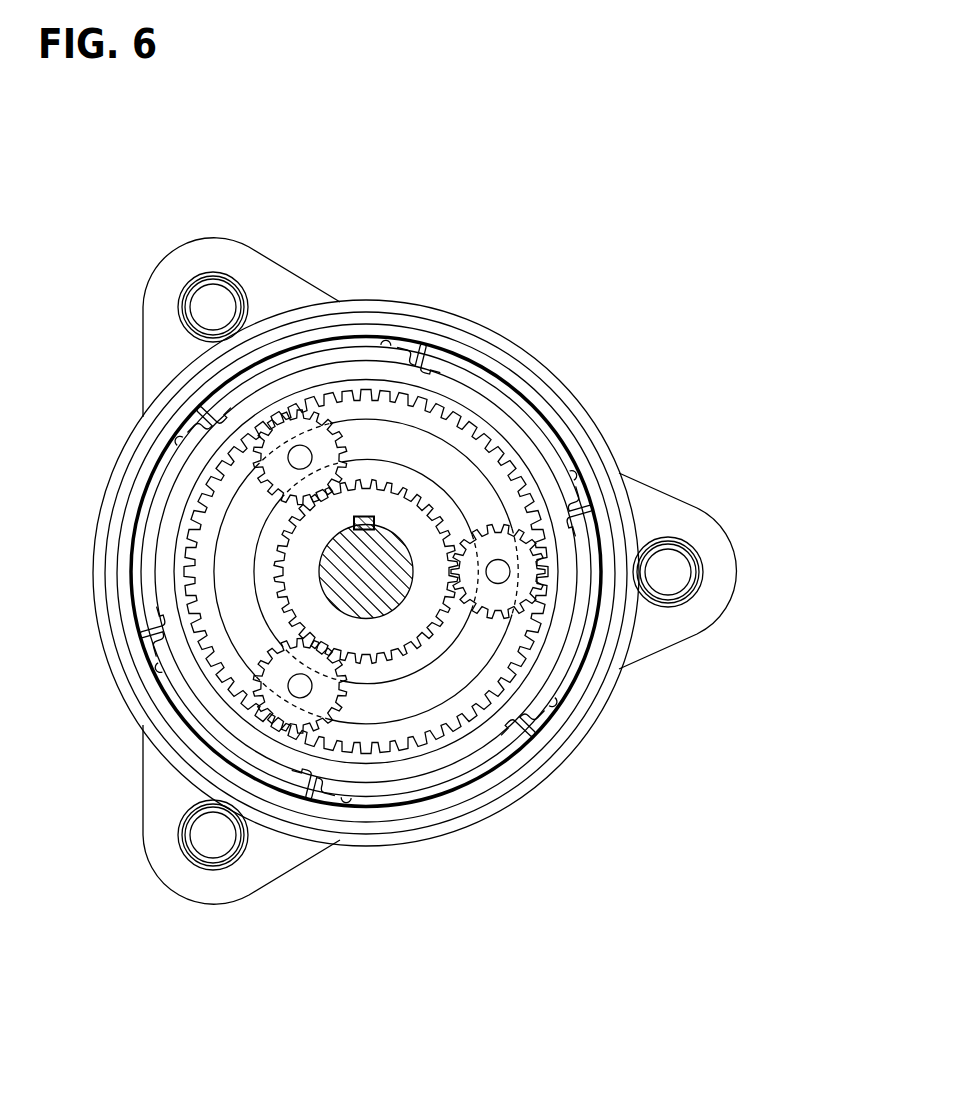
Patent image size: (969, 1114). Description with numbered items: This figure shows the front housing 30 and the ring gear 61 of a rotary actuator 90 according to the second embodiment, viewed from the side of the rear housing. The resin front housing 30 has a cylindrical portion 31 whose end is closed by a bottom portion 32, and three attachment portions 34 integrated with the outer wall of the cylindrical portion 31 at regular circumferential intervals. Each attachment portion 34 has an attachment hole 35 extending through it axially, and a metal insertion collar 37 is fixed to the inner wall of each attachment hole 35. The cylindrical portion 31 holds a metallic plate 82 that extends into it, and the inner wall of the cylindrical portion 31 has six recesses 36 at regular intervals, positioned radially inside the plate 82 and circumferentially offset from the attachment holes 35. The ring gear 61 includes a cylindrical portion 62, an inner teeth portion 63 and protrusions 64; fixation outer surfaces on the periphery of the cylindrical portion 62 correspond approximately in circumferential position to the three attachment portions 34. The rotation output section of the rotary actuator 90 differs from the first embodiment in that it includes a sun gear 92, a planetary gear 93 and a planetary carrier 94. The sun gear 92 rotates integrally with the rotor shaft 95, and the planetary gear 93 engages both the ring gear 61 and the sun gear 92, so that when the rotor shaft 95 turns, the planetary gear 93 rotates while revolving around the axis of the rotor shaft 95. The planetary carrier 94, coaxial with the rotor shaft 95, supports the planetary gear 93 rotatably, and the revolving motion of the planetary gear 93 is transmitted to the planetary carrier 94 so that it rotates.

The front housing 30 is at (574, 384).
The cylindrical portion 31 is at (98, 530).
The bottom portion 32 is at (203, 562).
The attachment portions 34 is at (176, 257).
The attachment hole 35 is at (196, 319).
The recesses 36 is at (440, 360).
The insertion collar 37 is at (229, 281).
The ring gear 61 is at (382, 797).
The cylindrical portion 62 is at (455, 773).
The inner teeth portion 63 is at (415, 766).
The protrusions 64 is at (421, 338).
The plate 82 is at (152, 488).
The rotary actuator 90 is at (465, 292).
The sun gear 92 is at (427, 603).
The planetary gear 93 is at (525, 583).
The planetary carrier 94 is at (465, 667).
The rotor shaft 95 is at (392, 548).